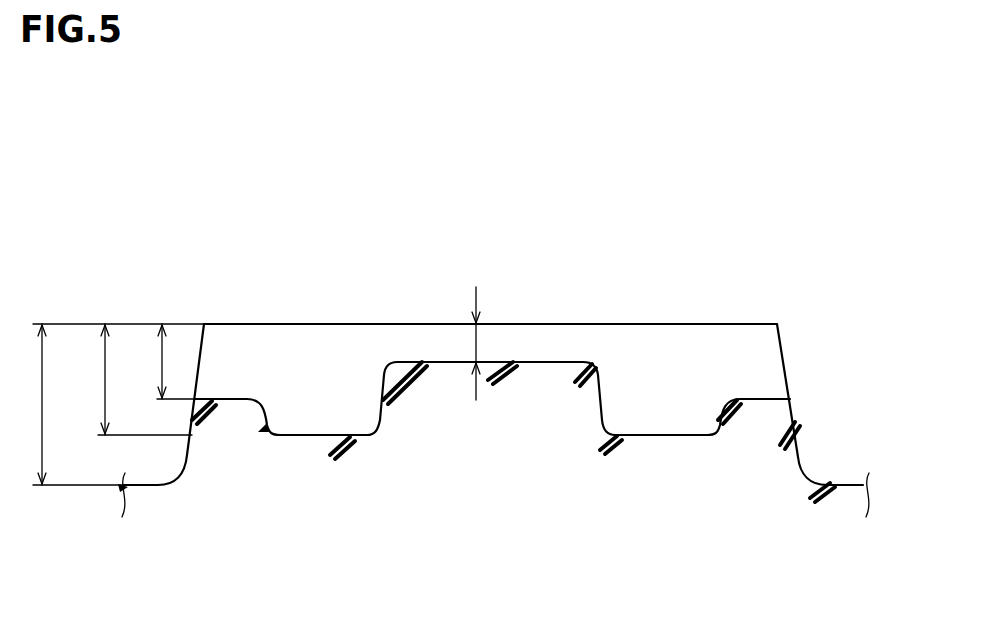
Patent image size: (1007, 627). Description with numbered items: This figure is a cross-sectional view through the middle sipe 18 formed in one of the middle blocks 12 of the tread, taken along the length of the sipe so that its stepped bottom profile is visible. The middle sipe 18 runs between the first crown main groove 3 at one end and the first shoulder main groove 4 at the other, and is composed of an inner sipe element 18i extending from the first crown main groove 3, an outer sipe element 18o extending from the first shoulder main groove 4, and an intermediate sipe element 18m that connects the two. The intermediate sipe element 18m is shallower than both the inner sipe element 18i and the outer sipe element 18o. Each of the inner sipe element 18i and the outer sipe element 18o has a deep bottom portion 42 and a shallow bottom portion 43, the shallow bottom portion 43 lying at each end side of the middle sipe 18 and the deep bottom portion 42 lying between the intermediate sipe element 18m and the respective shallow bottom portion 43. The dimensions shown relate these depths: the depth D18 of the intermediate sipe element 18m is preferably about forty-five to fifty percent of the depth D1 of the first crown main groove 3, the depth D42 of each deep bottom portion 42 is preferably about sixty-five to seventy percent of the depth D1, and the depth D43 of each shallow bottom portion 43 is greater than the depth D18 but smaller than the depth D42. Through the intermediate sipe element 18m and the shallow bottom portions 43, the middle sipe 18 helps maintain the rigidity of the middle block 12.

The first crown main groove 3 is at (165, 476).
The first shoulder main groove 4 is at (813, 479).
The middle block 12 is at (474, 516).
The middle sipe 18 is at (728, 183).
The inner sipe element 18i is at (343, 238).
The intermediate sipe element 18m is at (500, 340).
The outer sipe element 18o is at (765, 238).
The deep bottom portion 42 is at (318, 422).
The shallow bottom portion 43 is at (233, 382).
The depth of the first crown main groove D1 is at (24, 404).
The depth of the deep bottom portion D42 is at (83, 379).
The depth of the shallow bottom portion D43 is at (139, 361).
The depth of the intermediate sipe element D18 is at (476, 343).